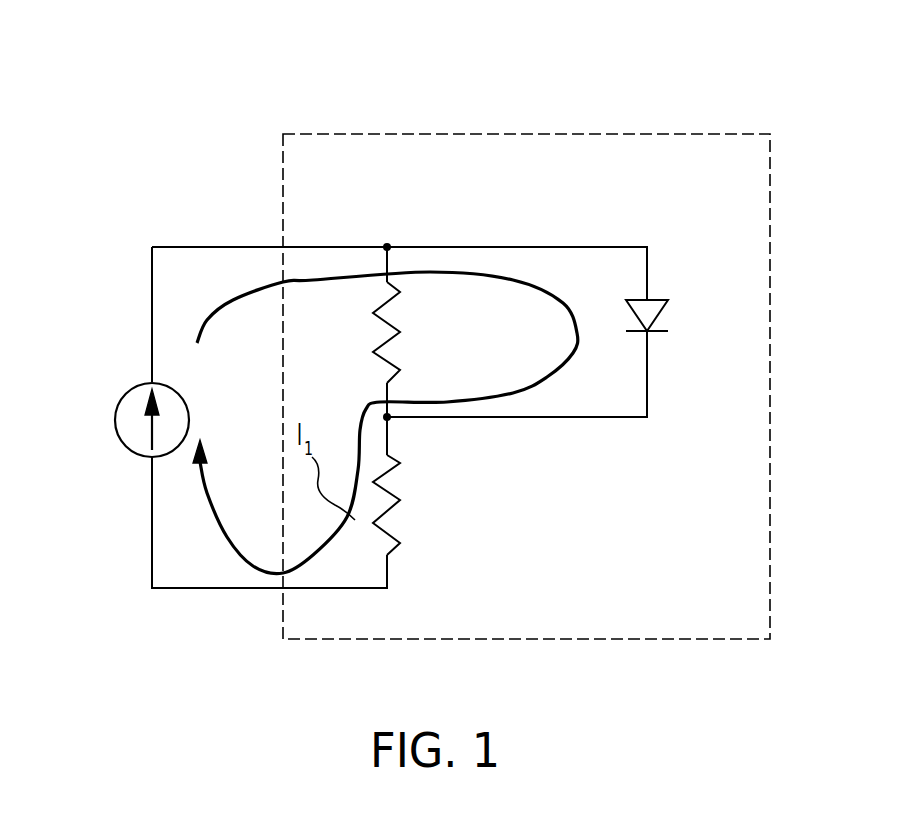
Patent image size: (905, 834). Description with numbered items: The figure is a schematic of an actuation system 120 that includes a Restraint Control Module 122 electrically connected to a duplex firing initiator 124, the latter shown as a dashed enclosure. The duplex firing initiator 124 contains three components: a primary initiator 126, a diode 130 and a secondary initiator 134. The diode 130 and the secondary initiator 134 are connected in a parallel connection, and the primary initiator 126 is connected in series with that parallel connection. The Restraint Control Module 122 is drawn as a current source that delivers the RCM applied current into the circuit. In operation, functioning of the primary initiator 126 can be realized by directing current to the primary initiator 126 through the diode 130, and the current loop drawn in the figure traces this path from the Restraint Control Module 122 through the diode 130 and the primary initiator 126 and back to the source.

The actuation system 120 is at (180, 127).
The Restraint Control Module 122 is at (135, 388).
The duplex firing initiator 124 is at (443, 135).
The primary initiator 126 is at (395, 453).
The diode 130 is at (657, 297).
The secondary initiator 134 is at (393, 325).